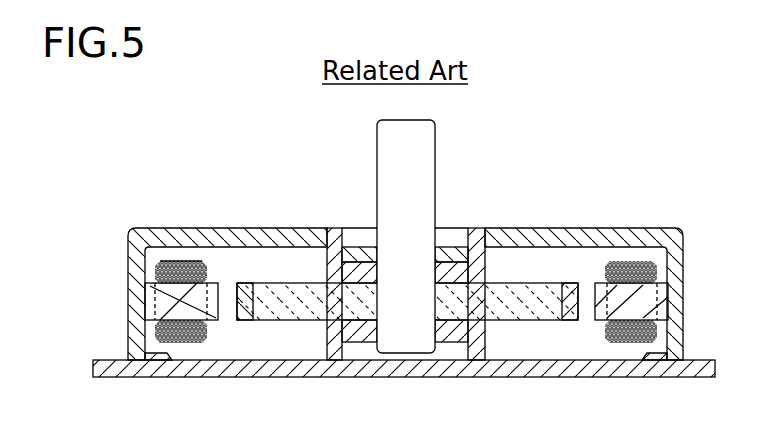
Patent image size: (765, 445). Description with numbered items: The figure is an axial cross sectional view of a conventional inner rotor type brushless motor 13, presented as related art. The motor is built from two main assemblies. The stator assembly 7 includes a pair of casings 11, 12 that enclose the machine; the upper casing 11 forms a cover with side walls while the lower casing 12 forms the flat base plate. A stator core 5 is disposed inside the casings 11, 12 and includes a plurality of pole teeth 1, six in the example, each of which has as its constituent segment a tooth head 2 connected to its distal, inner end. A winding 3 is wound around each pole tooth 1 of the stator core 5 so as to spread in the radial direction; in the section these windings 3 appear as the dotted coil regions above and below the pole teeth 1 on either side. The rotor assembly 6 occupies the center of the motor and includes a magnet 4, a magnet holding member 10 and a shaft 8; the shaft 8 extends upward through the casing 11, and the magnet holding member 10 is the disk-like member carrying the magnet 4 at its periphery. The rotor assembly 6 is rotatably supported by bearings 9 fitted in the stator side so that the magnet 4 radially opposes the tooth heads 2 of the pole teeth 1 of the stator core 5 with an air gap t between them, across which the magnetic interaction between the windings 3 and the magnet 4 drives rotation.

The pole tooth 1 is at (168, 303).
The tooth head 2 is at (157, 280).
The winding 3 is at (185, 262).
The magnet 4 is at (243, 288).
The stator core 5 is at (152, 315).
The rotor assembly 6 is at (338, 153).
The stator assembly 7 is at (73, 172).
The shaft 8 is at (395, 228).
The bearing 9 is at (472, 247).
The magnet holding member 10 is at (302, 295).
The casing 11 is at (552, 240).
The casing 12 is at (528, 367).
The inner rotor type brushless motor 13 is at (642, 172).
The air gap t is at (228, 310).